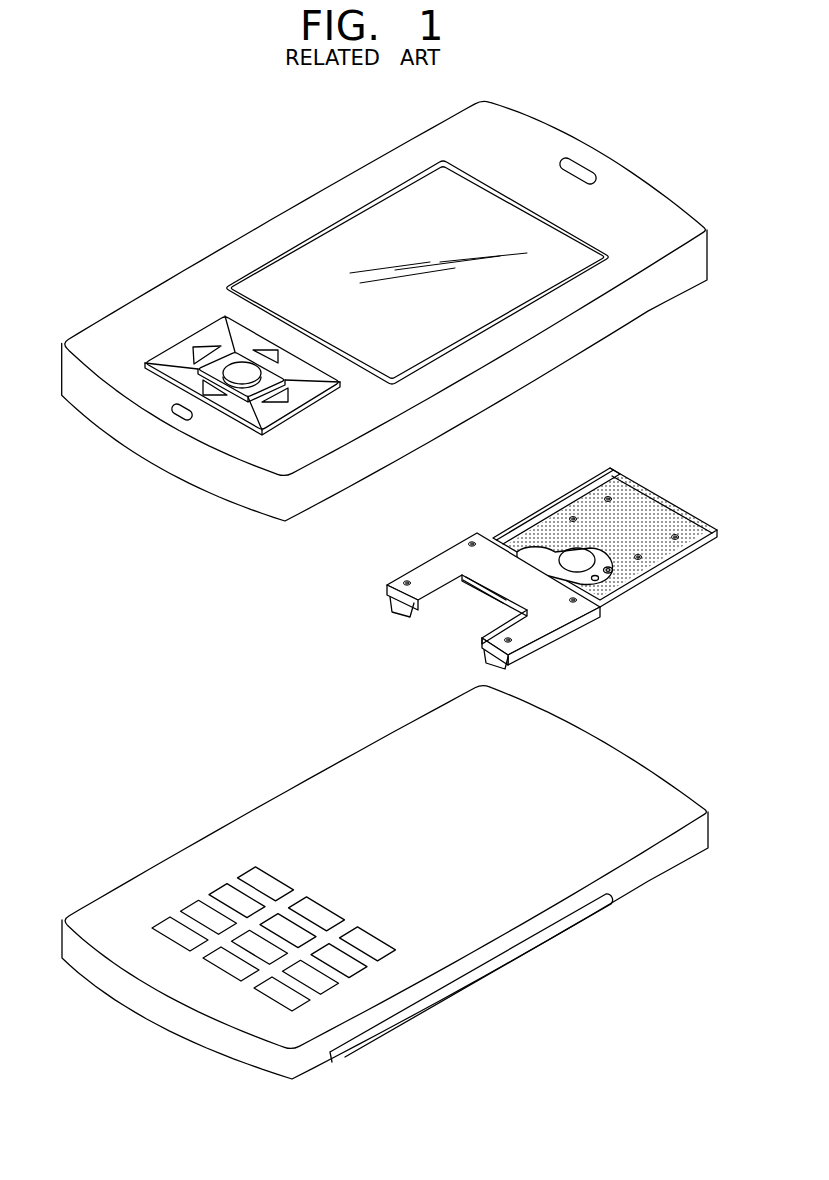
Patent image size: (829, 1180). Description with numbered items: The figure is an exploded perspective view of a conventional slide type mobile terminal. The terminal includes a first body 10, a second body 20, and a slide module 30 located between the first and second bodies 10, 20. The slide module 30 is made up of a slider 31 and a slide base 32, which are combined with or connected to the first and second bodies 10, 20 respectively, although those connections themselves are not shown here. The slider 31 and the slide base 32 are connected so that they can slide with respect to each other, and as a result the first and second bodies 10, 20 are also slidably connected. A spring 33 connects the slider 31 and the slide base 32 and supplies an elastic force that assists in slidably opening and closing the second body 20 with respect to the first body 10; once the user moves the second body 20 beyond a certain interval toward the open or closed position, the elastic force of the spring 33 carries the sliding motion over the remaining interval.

The first body 10 is at (136, 1039).
The second body 20 is at (138, 493).
The slide module 30 is at (545, 558).
The slider 31 is at (447, 563).
The slide base 32 is at (552, 501).
The spring 33 is at (547, 550).